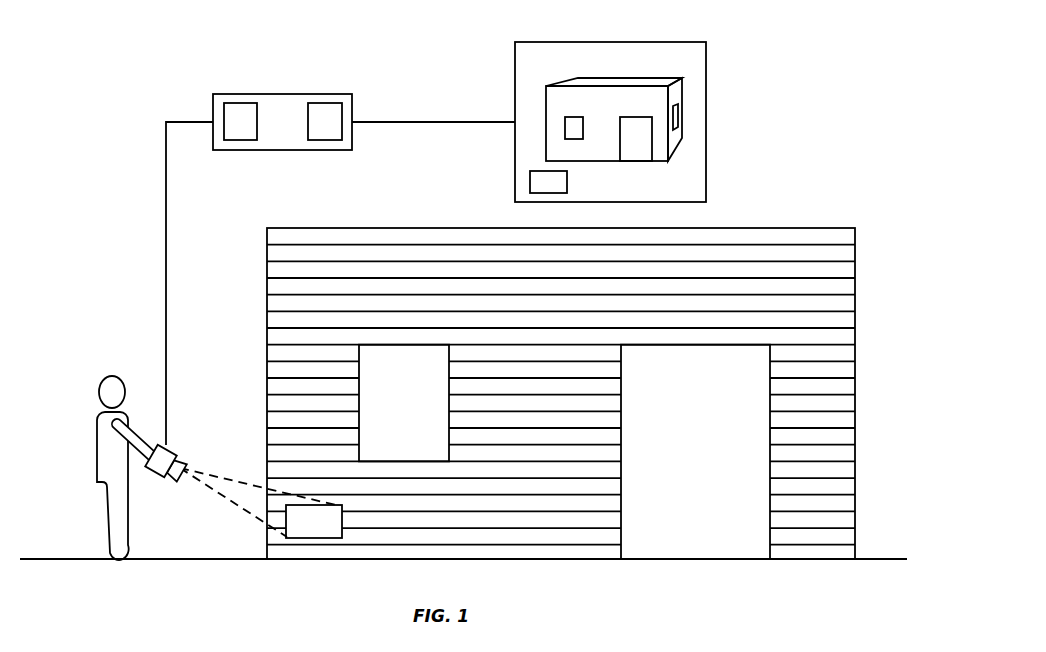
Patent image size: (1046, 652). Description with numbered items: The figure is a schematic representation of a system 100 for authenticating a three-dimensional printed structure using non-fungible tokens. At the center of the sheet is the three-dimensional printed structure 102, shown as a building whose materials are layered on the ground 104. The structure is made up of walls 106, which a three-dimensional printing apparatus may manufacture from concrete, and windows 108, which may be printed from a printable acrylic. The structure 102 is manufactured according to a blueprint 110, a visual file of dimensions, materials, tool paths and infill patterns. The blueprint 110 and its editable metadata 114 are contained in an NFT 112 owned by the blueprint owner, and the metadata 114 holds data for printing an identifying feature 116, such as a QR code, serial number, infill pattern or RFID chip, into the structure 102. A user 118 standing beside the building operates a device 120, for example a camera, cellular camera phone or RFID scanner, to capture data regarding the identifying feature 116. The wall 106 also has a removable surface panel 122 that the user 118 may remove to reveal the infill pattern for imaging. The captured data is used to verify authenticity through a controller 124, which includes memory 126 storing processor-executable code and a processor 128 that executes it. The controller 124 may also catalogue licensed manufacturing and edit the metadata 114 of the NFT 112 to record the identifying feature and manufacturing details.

The system 100 is at (170, 44).
The 3D printed structure 102 is at (535, 382).
The ground 104 is at (210, 559).
The walls 106 is at (274, 282).
The windows 108 is at (413, 411).
The blueprint 110 is at (612, 111).
The NFT 112 is at (649, 63).
The editable metadata 114 is at (532, 170).
The identifying feature 116 is at (343, 517).
The user 118 is at (102, 413).
The device 120 is at (181, 460).
The removable surface panel 122 is at (315, 538).
The controller 124 is at (340, 258).
The memory 126 is at (242, 140).
The processor 128 is at (325, 140).